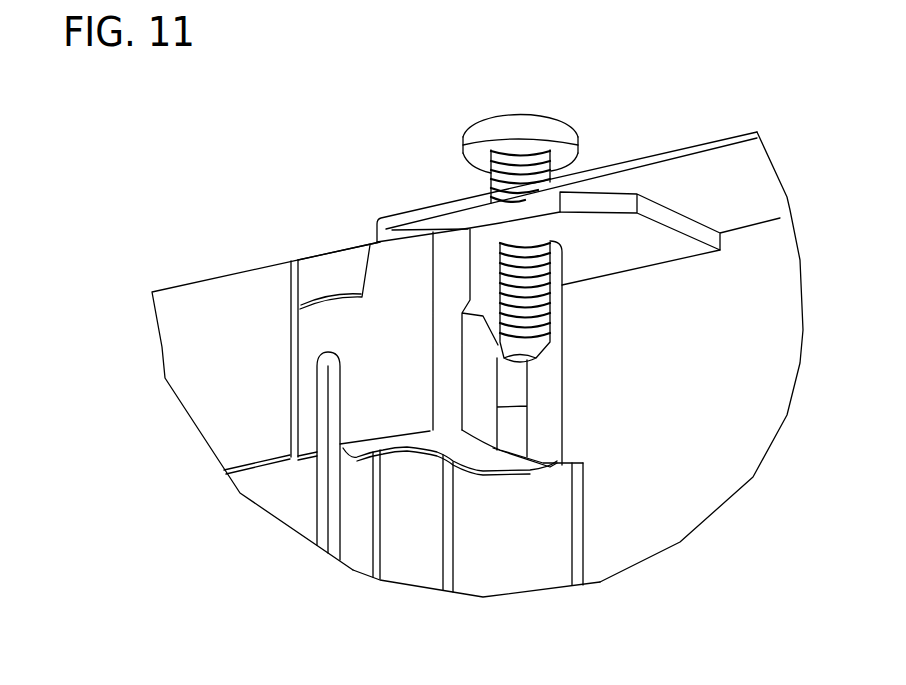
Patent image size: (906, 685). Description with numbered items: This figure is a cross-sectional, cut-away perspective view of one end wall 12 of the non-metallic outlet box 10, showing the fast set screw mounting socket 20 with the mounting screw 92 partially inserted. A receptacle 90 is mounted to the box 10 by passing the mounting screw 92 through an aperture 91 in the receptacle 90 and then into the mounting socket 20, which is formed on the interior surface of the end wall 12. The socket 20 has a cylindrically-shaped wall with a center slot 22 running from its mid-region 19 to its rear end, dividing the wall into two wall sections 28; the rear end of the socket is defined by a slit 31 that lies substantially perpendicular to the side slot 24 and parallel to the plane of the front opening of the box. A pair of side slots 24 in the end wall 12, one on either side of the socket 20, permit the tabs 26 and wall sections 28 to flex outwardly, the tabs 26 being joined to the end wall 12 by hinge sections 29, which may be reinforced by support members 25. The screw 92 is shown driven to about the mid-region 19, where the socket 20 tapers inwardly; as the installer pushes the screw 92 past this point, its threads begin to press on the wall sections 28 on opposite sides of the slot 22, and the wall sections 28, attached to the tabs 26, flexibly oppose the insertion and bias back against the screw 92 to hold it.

The non-metallic outlet box 10 is at (190, 334).
The end wall 12 is at (640, 527).
The mid-region 19 is at (548, 352).
The fast set screw mounting socket 20 is at (500, 280).
The slot 22 is at (508, 440).
The side slot 24 is at (325, 377).
The support member 25 is at (320, 270).
The tab 26 is at (397, 362).
The wall section 28 is at (452, 305).
The hinge section 29 is at (323, 327).
The slit 31 is at (530, 477).
The receptacle 90 is at (597, 203).
The aperture 91 is at (562, 252).
The mounting screw 92 is at (528, 114).